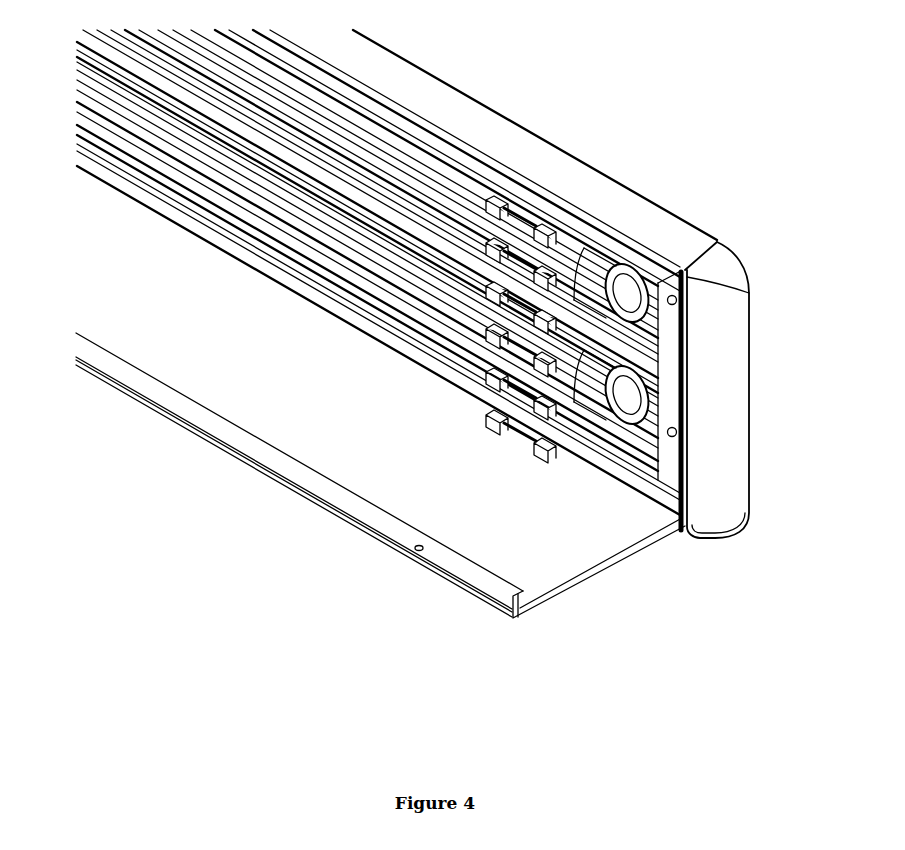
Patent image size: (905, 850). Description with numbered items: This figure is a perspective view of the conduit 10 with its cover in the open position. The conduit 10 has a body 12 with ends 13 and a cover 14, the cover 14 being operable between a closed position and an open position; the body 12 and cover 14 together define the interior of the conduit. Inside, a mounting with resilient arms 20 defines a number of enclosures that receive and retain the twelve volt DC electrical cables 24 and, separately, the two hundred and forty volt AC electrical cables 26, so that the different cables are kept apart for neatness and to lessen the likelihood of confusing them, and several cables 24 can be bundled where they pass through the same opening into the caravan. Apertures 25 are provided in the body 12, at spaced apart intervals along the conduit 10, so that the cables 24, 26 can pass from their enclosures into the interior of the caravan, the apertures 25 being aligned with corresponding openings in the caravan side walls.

The conduit 10 is at (548, 92).
The body 12 is at (443, 82).
The ends 13 is at (733, 252).
The cover 14 is at (580, 582).
The resilient arms 20 is at (515, 195).
The 12 volt DC electrical cables 24 is at (632, 262).
The apertures 25 is at (640, 372).
The 240 volt AC electrical cables 26 is at (620, 395).